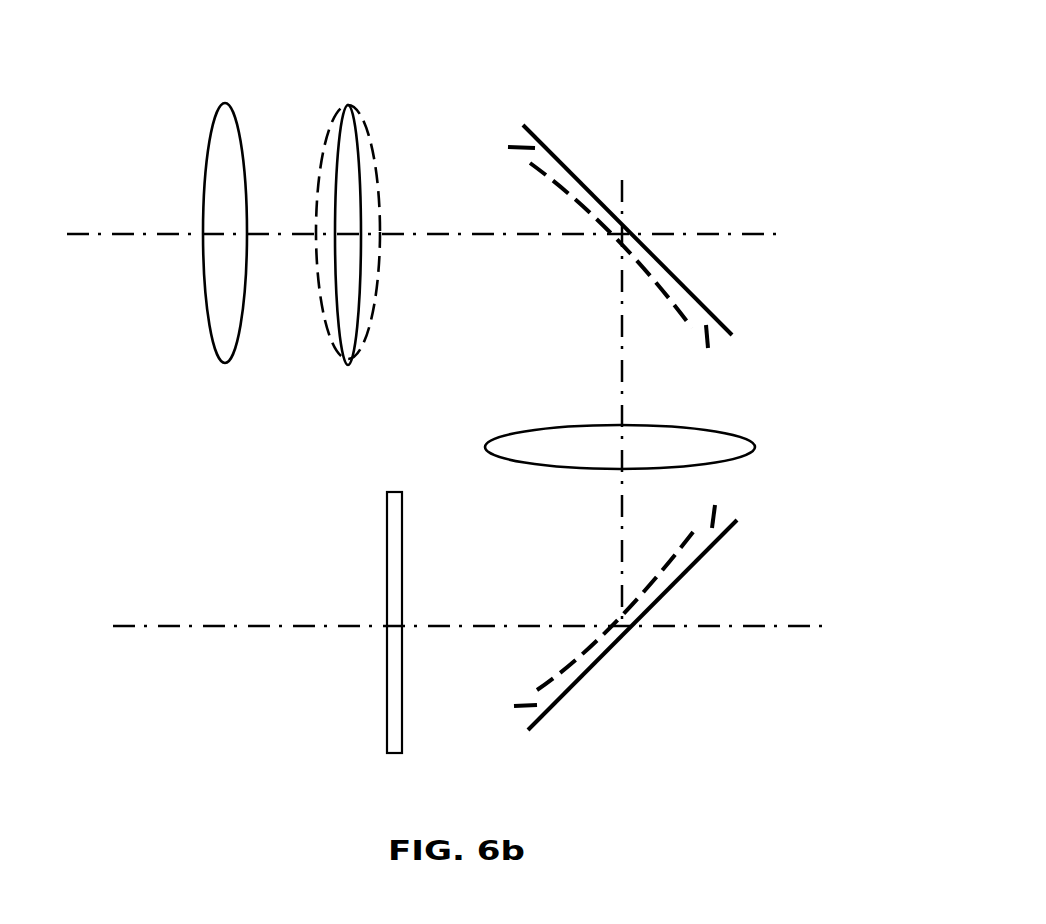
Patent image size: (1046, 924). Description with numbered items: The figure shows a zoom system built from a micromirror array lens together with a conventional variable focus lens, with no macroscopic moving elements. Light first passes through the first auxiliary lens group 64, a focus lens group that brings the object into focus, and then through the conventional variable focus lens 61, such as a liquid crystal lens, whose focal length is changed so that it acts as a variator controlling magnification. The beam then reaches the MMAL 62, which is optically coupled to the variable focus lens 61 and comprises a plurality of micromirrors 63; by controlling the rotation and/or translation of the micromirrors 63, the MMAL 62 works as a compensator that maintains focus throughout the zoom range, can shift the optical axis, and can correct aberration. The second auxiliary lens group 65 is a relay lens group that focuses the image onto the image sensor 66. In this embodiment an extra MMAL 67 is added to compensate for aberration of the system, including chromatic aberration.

The conventional variable focus lens 61 is at (330, 355).
The MMAL 62 is at (562, 158).
The micromirrors 63 is at (707, 348).
The first auxiliary lens group 64 is at (202, 355).
The second auxiliary lens group 65 is at (482, 435).
The image sensor 66 is at (375, 660).
The extra MMAL 67 is at (588, 675).